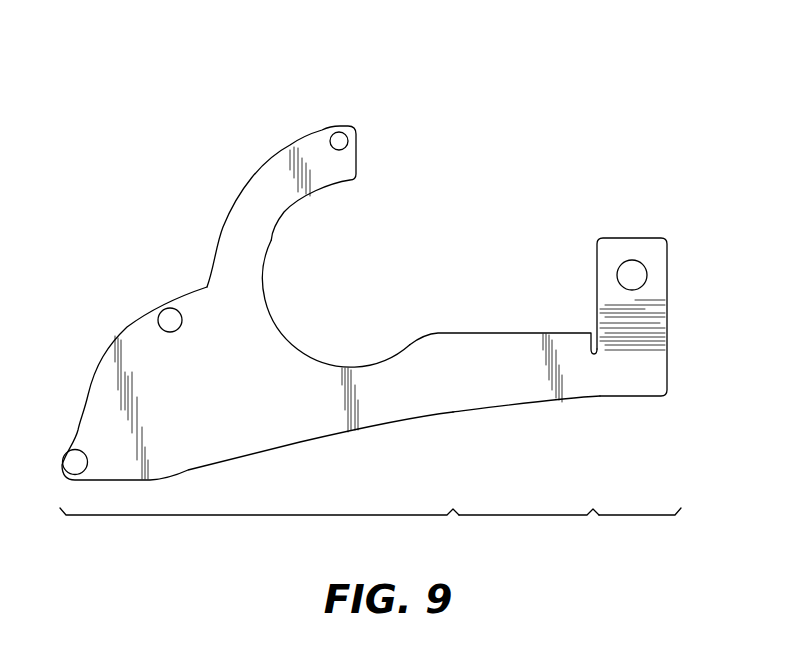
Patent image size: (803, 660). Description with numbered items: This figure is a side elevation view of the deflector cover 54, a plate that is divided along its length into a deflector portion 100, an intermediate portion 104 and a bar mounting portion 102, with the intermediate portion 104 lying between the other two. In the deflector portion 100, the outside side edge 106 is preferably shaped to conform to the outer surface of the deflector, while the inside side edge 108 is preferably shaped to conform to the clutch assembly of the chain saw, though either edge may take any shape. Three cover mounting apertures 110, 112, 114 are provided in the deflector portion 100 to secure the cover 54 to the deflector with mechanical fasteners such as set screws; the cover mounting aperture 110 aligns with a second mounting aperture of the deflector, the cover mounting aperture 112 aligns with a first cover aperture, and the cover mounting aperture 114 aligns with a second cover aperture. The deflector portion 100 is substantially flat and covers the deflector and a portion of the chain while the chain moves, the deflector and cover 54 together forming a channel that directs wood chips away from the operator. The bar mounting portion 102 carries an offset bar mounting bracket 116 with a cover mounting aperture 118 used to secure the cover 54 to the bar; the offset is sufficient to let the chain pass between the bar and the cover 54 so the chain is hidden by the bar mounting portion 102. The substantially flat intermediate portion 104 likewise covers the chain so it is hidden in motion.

The cover 54 is at (477, 330).
The deflector portion 100 is at (262, 514).
The bar mounting portion 102 is at (641, 514).
The intermediate portion 104 is at (527, 514).
The outside side edge 106 is at (223, 219).
The inside side edge 108 is at (267, 308).
The cover mounting aperture 110 is at (170, 318).
The cover mounting aperture 112 is at (339, 141).
The cover mounting aperture 114 is at (75, 462).
The offset bar mounting bracket 116 is at (597, 268).
The cover mounting aperture 118 is at (631, 274).